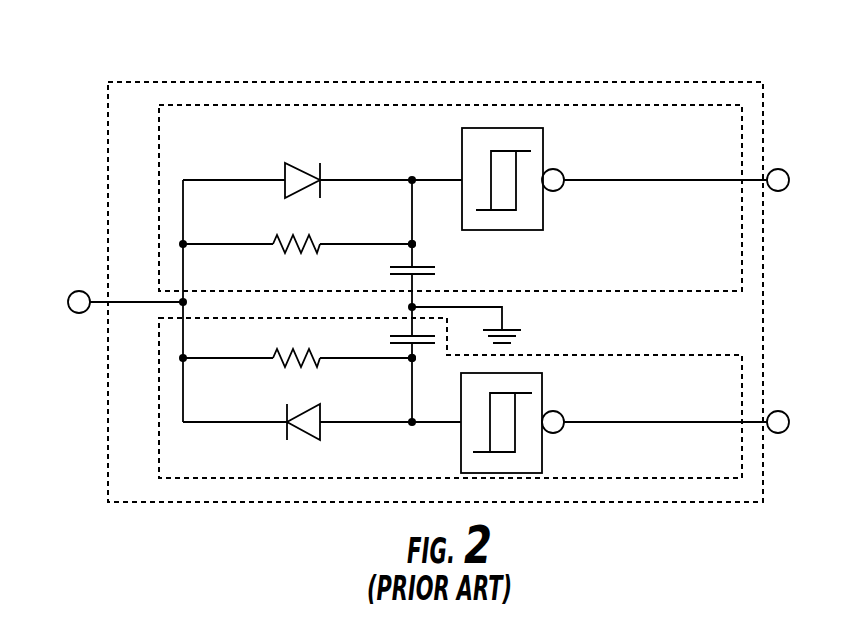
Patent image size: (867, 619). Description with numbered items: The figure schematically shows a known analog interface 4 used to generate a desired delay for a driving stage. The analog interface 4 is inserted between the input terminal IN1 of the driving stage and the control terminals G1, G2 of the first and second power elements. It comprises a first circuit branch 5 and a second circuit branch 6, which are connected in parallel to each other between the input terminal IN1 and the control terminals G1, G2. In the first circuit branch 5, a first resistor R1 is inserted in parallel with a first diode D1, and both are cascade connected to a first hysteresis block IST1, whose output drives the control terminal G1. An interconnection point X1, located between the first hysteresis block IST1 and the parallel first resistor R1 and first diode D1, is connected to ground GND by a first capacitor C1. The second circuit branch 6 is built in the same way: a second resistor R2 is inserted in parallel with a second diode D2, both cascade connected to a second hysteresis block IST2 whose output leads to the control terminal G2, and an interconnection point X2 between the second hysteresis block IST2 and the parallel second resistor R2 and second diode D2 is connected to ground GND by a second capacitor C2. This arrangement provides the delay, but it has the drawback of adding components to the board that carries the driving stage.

The analog interface 4 is at (552, 82).
The first circuit branch 5 is at (673, 105).
The second circuit branch 6 is at (742, 368).
The input terminal IN1 is at (107, 301).
The first diode D1 is at (302, 164).
The first resistor R1 is at (296, 227).
The interconnection point X1 is at (426, 235).
The first capacitor C1 is at (426, 270).
The first hysteresis block IST1 is at (526, 182).
The control terminal G1 is at (794, 181).
The ground GND is at (524, 339).
The second resistor R2 is at (296, 342).
The second capacitor C2 is at (400, 339).
The interconnection point X2 is at (426, 370).
The second diode D2 is at (303, 405).
The second hysteresis block IST2 is at (526, 426).
The control terminal G2 is at (794, 423).